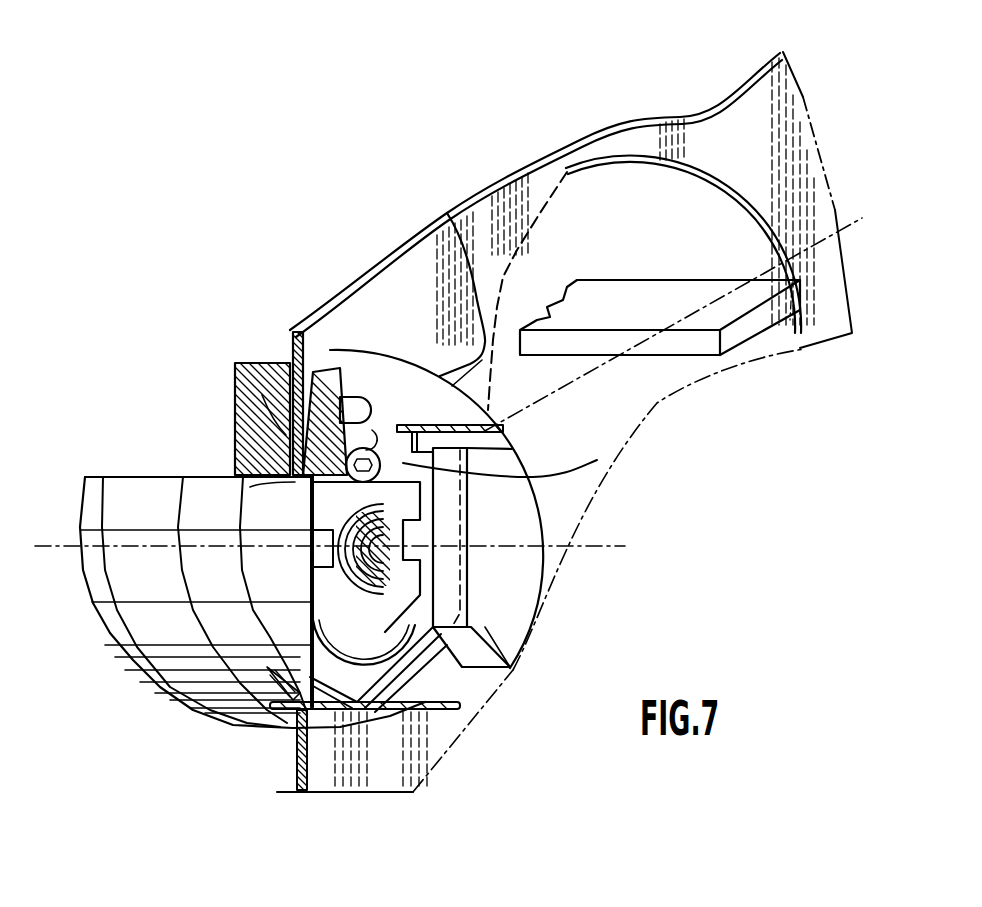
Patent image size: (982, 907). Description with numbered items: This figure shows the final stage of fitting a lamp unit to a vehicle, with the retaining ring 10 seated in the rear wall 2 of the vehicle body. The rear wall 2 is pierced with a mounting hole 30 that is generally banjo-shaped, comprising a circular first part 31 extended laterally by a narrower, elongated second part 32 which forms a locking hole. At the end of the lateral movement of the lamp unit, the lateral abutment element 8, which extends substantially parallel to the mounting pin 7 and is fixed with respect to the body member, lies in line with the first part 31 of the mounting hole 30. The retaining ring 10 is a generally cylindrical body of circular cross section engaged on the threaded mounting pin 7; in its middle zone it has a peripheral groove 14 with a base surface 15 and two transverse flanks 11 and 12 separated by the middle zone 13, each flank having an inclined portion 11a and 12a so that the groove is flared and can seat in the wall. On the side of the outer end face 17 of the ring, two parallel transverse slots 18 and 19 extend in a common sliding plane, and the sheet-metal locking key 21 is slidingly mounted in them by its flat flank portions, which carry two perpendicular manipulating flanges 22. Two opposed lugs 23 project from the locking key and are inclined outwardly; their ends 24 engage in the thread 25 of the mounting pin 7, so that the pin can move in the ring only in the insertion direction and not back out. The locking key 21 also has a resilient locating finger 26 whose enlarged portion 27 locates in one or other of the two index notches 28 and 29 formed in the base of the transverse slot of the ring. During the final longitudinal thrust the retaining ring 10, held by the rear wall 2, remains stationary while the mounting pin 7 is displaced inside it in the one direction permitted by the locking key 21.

The rear wall 2 is at (670, 110).
The mounting hole 30 is at (762, 205).
The first part 31 is at (588, 212).
The second part 32 is at (457, 222).
The lateral abutment element 8 is at (652, 272).
The inclined portion 12a is at (315, 372).
The retaining ring 10 is at (228, 358).
The flank 11 is at (258, 432).
The inclined portion 11a is at (278, 388).
The middle zone 13 is at (288, 392).
The flank 12 is at (336, 368).
The index notch 28 is at (355, 400).
The enlarged portion 27 is at (358, 455).
The manipulating flange 22 is at (428, 418).
The mounting pin 7 is at (416, 537).
The transverse slot 19 is at (420, 650).
The outer end face 17 is at (510, 597).
The resilient locating finger 26 is at (598, 461).
The peripheral groove 14 is at (237, 468).
The base surface 15 is at (250, 487).
The index notch 29 is at (311, 503).
The thread 25 is at (350, 612).
The lug 23 is at (420, 538).
The end 24 is at (398, 575).
The locking key 21 is at (298, 756).
The transverse slot 18 is at (248, 731).